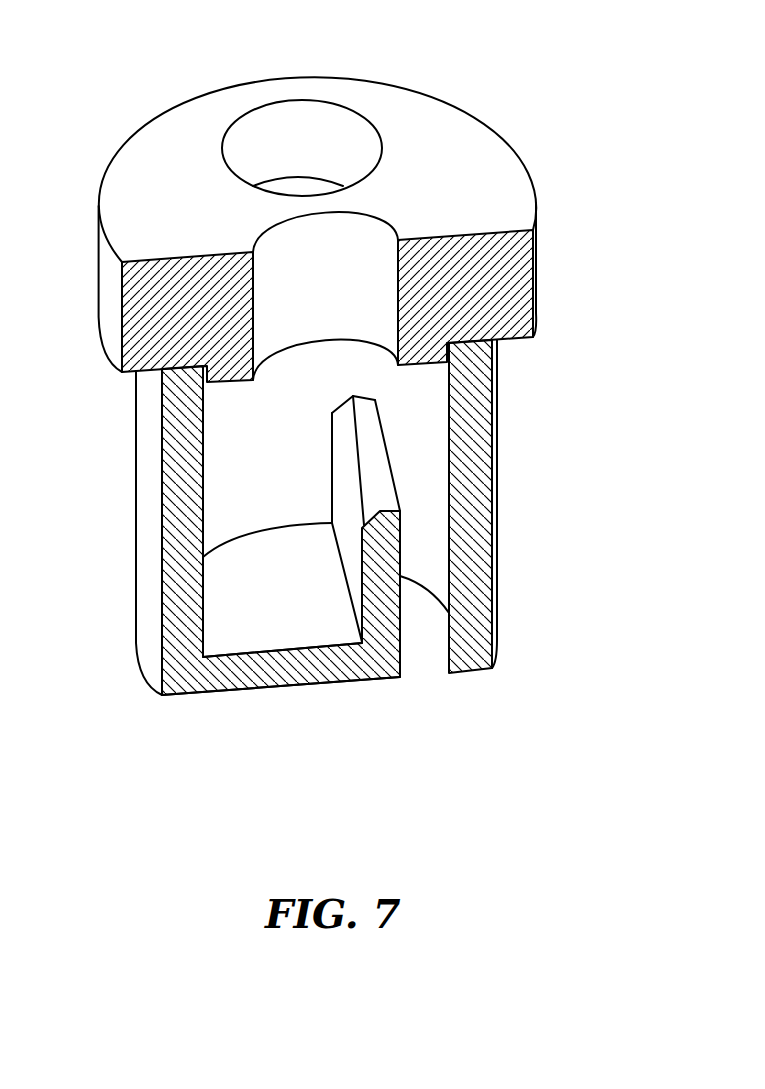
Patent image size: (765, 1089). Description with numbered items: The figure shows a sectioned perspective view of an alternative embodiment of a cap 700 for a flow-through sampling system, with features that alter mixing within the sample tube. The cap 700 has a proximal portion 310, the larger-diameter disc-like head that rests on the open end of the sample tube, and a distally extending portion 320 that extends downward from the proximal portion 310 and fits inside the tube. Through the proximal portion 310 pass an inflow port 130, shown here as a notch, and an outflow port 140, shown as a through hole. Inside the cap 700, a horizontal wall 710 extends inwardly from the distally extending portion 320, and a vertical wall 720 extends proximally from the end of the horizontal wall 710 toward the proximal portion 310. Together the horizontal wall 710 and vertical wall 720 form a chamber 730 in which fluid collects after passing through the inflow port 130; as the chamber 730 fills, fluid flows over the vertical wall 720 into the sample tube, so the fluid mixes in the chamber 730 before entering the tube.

The cap 700 is at (550, 478).
The proximal portion 310 is at (173, 177).
The outflow port 140 is at (288, 145).
The inflow port 130 is at (342, 305).
The distally extending portion 320 is at (152, 433).
The chamber 730 is at (270, 482).
The horizontal wall 710 is at (273, 670).
The vertical wall 720 is at (383, 607).